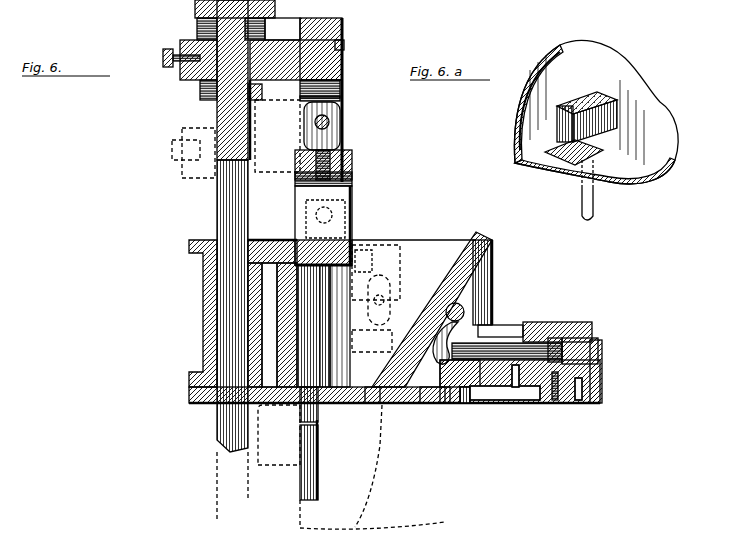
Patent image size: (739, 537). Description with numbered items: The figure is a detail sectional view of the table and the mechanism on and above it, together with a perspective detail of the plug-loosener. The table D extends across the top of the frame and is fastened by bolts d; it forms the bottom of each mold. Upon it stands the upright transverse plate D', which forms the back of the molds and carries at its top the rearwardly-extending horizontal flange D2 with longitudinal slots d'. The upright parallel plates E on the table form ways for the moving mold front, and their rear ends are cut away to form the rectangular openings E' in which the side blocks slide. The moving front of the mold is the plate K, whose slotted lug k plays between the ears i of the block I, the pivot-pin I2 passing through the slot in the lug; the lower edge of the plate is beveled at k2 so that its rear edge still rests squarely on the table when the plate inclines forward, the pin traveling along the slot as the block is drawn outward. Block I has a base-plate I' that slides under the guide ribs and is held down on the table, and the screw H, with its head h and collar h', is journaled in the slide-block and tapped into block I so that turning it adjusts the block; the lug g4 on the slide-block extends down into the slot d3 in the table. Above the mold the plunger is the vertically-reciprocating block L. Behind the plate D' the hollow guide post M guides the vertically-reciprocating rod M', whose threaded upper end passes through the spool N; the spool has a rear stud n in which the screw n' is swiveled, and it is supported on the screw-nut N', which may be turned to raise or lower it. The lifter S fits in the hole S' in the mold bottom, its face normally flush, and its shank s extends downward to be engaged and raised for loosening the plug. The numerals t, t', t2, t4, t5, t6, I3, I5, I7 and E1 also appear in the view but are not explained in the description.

In FIG. 6, the spool N is at (183, 29).
In FIG. 6, the stud n is at (182, 68).
In FIG. 6, the screw n' is at (168, 59).
In FIG. 6, the threaded nut t5 is at (205, 82).
In FIG. 6, the screw-nut N' is at (187, 104).
In FIG. 6, the vertically-reciprocating rod M' is at (218, 226).
In FIG. 6, the guide post M is at (199, 313).
In FIG. 6, the horizontal flange D2 is at (277, 241).
In FIG. 6, the block I7 is at (300, 28).
In FIG. 6, the recess I5 is at (282, 29).
In FIG. 6, the pivot-pin I2 is at (343, 56).
In FIG. 6, the wall t6 is at (345, 47).
In FIG. 6, the thread t4 is at (343, 82).
In FIG. 6, the collar t2 is at (300, 89).
In FIG. 6, the base-plate I' is at (416, 223).
In FIG. 6, the pin I3 is at (315, 124).
In FIG. 6, the block t is at (330, 160).
In FIG. 6, the thread t' is at (311, 187).
In FIG. 6, the vertically-reciprocating block L is at (350, 193).
In FIG. 6, the upright transverse plate D' is at (299, 325).
In FIG. 6a, the upright transverse plate D' is at (527, 101).
In FIG. 6, the guide E1 is at (312, 297).
In FIG. 6, the upright parallel plate E is at (383, 298).
In FIG. 6, the rectangular opening E' is at (373, 255).
In FIG. 6, the plate K is at (493, 242).
In FIG. 6, the ear i is at (465, 319).
In FIG. 6, the table D is at (394, 390).
In FIG. 6a, the table D is at (596, 112).
In FIG. 6, the bolt d is at (535, 326).
In FIG. 6, the collar h' is at (571, 329).
In FIG. 6, the screw H is at (598, 339).
In FIG. 6, the head h is at (533, 351).
In FIG. 6, the longitudinal slot d' is at (601, 371).
In FIG. 6, the block I is at (460, 401).
In FIG. 6, the slot d3 is at (512, 395).
In FIG. 6, the lug g4 is at (545, 404).
In FIG. 6, the slotted lug k is at (437, 406).
In FIG. 6, the beveled lower edge k2 is at (372, 394).
In FIG. 6, the hole S' is at (297, 409).
In FIG. 6a, the hole S' is at (566, 171).
In FIG. 6, the lifter-shank s is at (305, 472).
In FIG. 6a, the lifter-shank s is at (586, 200).
In FIG. 6a, the lifter S is at (587, 111).